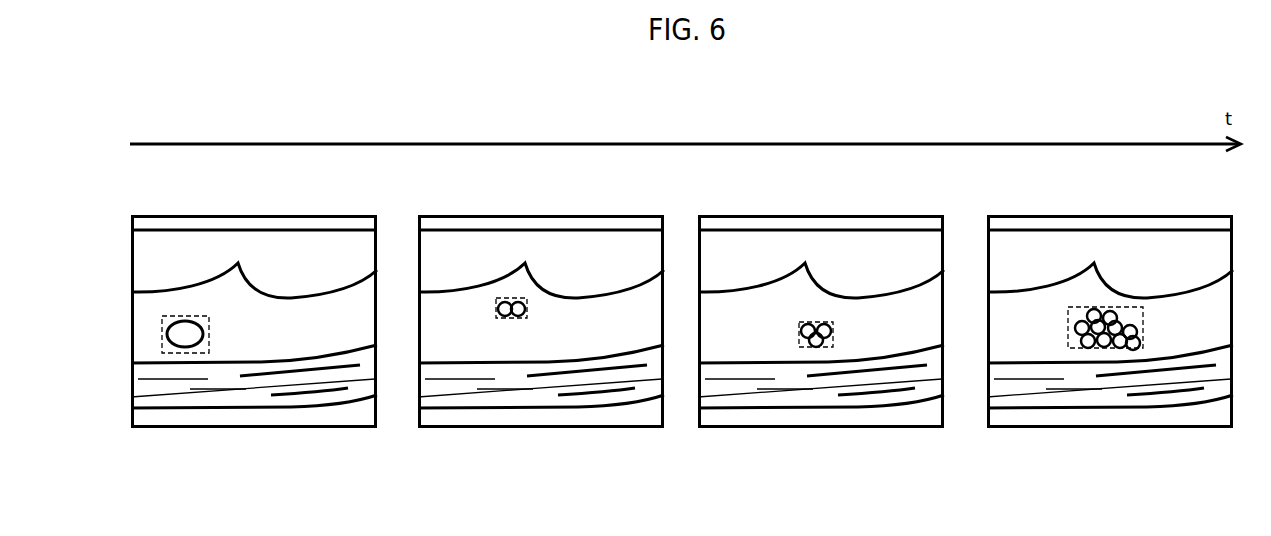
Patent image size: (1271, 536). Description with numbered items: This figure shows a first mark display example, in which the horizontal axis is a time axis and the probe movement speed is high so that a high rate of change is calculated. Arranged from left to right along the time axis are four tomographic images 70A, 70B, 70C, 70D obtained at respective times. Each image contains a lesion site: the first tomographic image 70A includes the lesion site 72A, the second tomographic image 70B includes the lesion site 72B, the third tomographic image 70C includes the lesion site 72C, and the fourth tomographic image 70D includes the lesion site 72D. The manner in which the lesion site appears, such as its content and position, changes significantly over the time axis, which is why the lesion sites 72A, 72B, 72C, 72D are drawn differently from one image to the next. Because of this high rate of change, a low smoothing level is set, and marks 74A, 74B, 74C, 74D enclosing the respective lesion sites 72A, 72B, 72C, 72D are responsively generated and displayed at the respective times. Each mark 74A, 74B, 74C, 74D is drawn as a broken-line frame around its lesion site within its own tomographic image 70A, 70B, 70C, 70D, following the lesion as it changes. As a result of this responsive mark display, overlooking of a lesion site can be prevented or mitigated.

The tomographic image 70A is at (268, 215).
The tomographic image 70B is at (560, 215).
The tomographic image 70C is at (840, 215).
The tomographic image 70D is at (1120, 215).
The lesion site 72A is at (184, 321).
The lesion site 72B is at (503, 298).
The lesion site 72C is at (807, 321).
The lesion site 72D is at (1090, 316).
The mark 74A is at (187, 353).
The mark 74B is at (505, 318).
The mark 74C is at (817, 347).
The mark 74D is at (1103, 348).